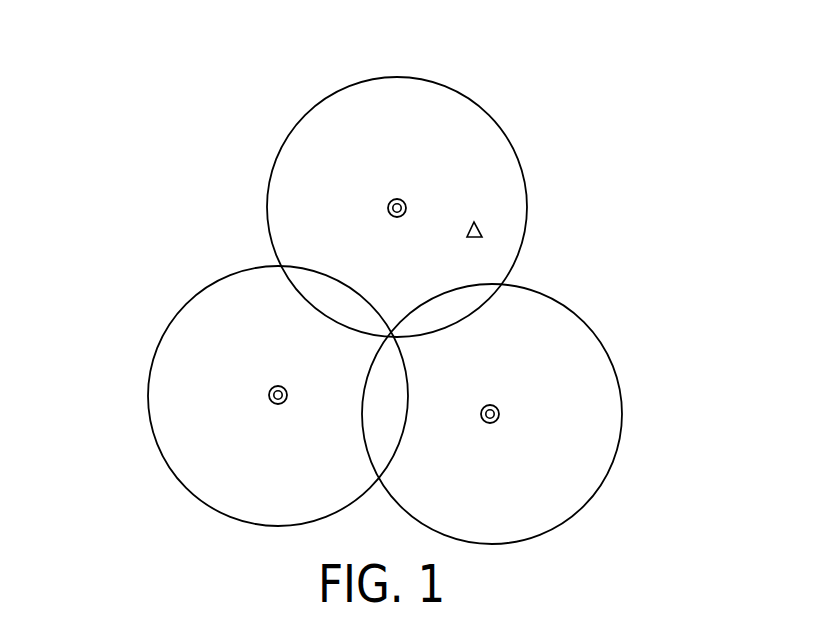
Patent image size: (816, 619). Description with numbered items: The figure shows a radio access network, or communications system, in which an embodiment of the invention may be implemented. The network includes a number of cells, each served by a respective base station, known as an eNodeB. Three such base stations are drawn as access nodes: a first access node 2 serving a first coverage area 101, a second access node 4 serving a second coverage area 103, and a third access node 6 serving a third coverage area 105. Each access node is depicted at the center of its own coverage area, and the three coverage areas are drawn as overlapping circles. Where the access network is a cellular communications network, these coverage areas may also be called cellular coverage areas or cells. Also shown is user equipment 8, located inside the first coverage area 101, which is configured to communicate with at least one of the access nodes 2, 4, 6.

The first coverage area 101 is at (495, 113).
The second coverage area 103 is at (622, 411).
The third coverage area 105 is at (149, 393).
The first access node 2 is at (401, 199).
The second access node 4 is at (494, 404).
The third access node 6 is at (282, 386).
The user equipment 8 is at (482, 232).